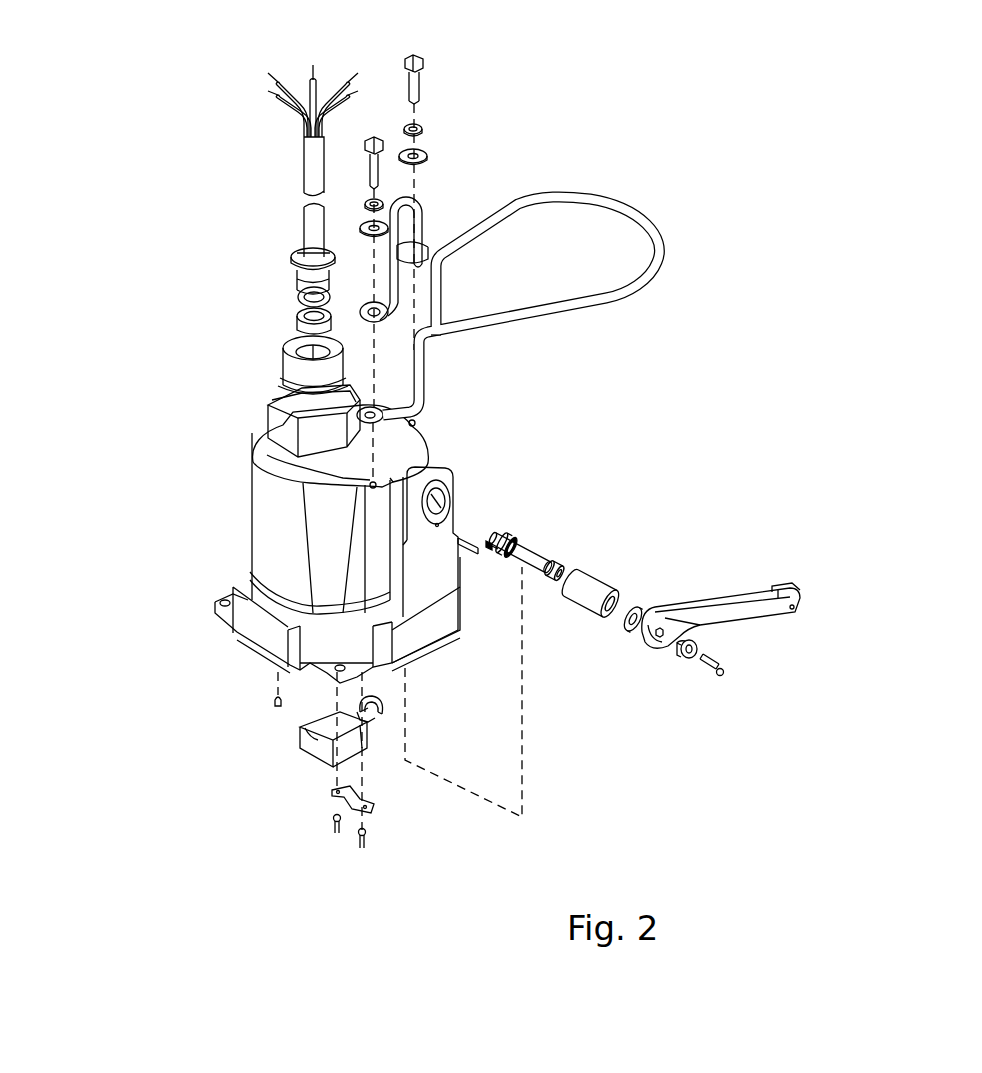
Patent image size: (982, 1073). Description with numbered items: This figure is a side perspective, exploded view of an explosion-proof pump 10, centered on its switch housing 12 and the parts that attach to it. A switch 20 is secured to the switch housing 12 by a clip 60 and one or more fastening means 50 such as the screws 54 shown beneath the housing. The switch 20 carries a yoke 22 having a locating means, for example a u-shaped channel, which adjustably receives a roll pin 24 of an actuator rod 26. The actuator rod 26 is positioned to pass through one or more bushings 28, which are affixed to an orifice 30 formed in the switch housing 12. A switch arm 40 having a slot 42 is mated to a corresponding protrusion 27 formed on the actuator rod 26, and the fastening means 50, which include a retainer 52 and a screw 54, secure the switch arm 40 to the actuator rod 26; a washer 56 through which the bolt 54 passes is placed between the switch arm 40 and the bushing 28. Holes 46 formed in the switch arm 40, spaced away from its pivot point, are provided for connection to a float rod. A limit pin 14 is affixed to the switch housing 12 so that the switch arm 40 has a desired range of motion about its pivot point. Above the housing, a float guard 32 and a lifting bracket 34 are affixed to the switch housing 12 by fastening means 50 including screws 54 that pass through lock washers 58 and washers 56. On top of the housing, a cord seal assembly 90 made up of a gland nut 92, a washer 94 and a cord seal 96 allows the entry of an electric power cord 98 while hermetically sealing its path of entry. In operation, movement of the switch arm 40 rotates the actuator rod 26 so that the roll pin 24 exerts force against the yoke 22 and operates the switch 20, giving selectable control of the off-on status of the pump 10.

The pump 10 is at (237, 473).
The switch housing 12 is at (250, 507).
The limit pin 14 is at (480, 545).
The switch 20 is at (310, 747).
The yoke 22 is at (375, 712).
The roll pin 24 is at (480, 545).
The actuator rod 26 is at (523, 550).
The protrusion 27 is at (563, 568).
The bushing 28 is at (583, 607).
The orifice 30 is at (452, 470).
The float guard 32 is at (647, 287).
The lifting bracket 34 is at (423, 217).
The switch arm 40 is at (763, 620).
The slot 42 is at (658, 633).
The holes 46 is at (793, 612).
The fastening means 50 is at (723, 670).
The retainer 52 is at (688, 653).
The screw 54 is at (422, 58).
The washer 56 is at (428, 155).
The lock washer 58 is at (422, 127).
The clip 60 is at (337, 790).
The cord seal assembly 90 is at (195, 323).
The gland nut 92 is at (292, 250).
The washer 94 is at (300, 294).
The cord seal 96 is at (300, 318).
The electric power cord 98 is at (303, 173).